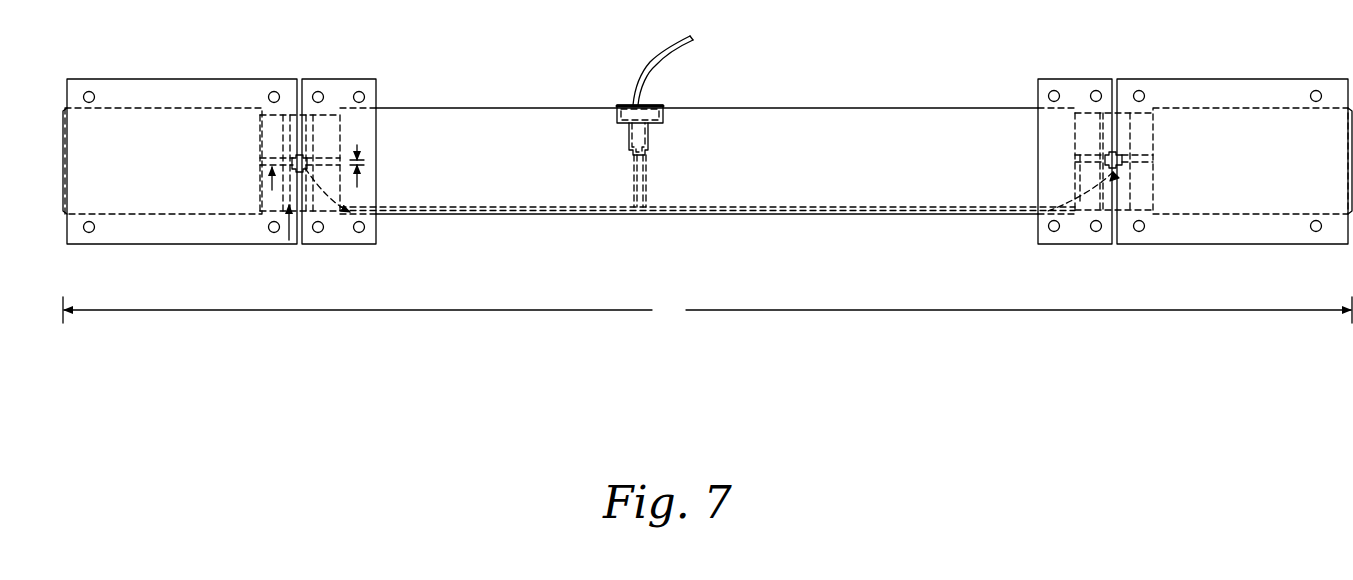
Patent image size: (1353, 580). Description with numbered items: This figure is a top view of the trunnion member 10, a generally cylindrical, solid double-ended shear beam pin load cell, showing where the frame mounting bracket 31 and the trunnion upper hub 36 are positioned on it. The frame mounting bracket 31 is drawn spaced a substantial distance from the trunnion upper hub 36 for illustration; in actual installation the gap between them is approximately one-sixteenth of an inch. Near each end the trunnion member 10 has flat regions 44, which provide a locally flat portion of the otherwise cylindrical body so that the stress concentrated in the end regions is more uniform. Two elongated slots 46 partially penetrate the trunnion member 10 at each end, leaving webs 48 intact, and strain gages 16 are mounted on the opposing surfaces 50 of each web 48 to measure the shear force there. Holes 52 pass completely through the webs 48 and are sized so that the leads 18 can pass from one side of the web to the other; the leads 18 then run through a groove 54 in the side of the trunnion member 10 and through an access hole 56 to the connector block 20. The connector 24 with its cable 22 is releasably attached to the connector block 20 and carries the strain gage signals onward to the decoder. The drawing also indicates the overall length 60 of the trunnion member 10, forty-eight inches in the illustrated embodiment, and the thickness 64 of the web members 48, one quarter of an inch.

The trunnion member 10 is at (947, 122).
The strain gages 16 is at (303, 155).
The leads 18 is at (595, 216).
The connector block 20 is at (630, 135).
The cable 22 is at (648, 67).
The connector 24 is at (663, 105).
The frame mounting bracket 31 is at (368, 81).
The trunnion upper hub 36 is at (173, 81).
The flat regions 44 is at (266, 115).
The elongated slots 46 is at (289, 240).
The webs 48 is at (268, 217).
The opposing surfaces 50 is at (289, 117).
The holes 52 is at (303, 163).
The groove 54 is at (725, 215).
The access hole 56 is at (645, 182).
The overall length 60 is at (707, 310).
The thickness 64 is at (357, 145).